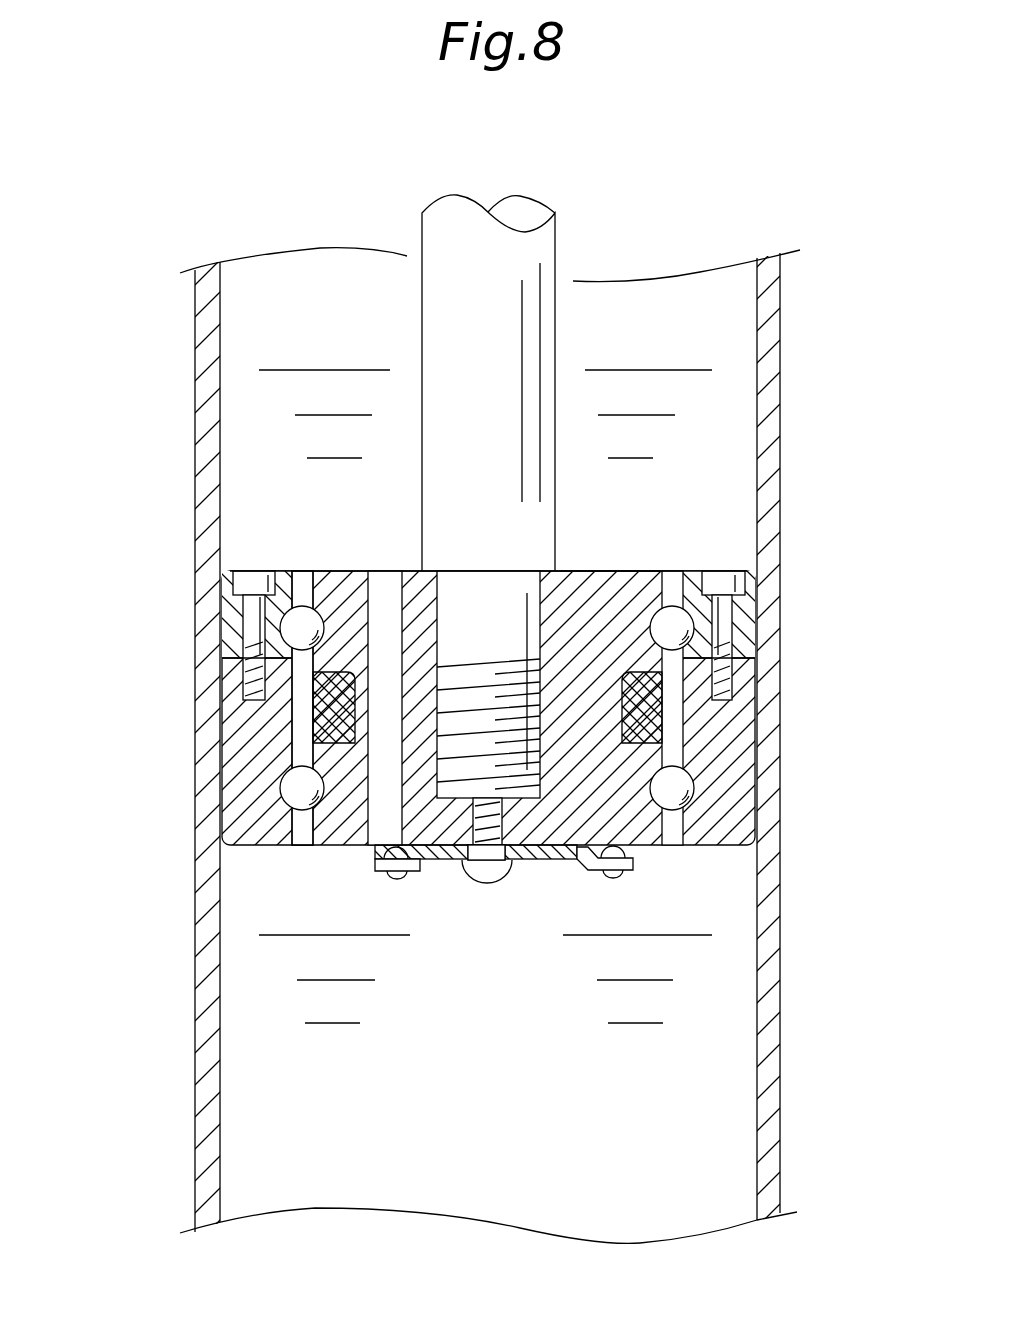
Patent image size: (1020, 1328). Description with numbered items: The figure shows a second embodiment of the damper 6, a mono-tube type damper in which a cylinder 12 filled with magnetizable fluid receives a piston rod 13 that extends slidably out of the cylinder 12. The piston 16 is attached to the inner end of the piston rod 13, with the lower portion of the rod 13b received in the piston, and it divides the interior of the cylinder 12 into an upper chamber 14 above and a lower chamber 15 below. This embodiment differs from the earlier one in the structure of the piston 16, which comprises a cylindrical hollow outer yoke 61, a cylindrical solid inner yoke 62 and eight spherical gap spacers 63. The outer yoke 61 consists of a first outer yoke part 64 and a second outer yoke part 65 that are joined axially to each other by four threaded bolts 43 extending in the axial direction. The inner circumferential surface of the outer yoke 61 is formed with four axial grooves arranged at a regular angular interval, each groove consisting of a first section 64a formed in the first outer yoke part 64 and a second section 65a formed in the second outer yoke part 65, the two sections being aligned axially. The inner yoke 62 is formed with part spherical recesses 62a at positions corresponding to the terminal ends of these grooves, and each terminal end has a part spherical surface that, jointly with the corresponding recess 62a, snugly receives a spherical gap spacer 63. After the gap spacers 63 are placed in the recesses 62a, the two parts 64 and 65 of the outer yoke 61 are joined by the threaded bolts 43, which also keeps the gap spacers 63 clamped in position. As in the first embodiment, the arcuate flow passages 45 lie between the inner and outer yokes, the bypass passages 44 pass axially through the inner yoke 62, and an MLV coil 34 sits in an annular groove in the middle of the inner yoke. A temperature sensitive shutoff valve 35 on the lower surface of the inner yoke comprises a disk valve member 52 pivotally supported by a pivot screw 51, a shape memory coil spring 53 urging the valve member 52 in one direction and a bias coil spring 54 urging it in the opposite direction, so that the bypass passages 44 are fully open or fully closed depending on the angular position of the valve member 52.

The damper 6 is at (155, 216).
The cylinder 12 is at (200, 968).
The piston rod 13 is at (548, 248).
The threaded end portion of piston rod 13b is at (500, 588).
The upper chamber 14 is at (742, 385).
The lower chamber 15 is at (742, 1097).
The piston 16 is at (259, 489).
The MLV coil 34 is at (657, 712).
The temperature sensitive shutoff valve 35 is at (587, 898).
The threaded bolts 43 is at (727, 571).
The bypass passages 44 is at (385, 597).
The arcuate flow passages 45 is at (302, 733).
The pivot screw 51 is at (487, 875).
The disk valve member 52 is at (545, 860).
The shape memory coil spring 53 is at (397, 878).
The bias coil spring 54 is at (609, 878).
The outer yoke 61 is at (246, 848).
The inner yoke 62 is at (618, 572).
The part spherical recesses 62a is at (665, 612).
The spherical gap spacers 63 is at (683, 627).
The first outer yoke part 64 is at (225, 622).
The first section of axial groove 64a is at (690, 660).
The second outer yoke part 65 is at (225, 678).
The second section of axial groove 65a is at (680, 750).